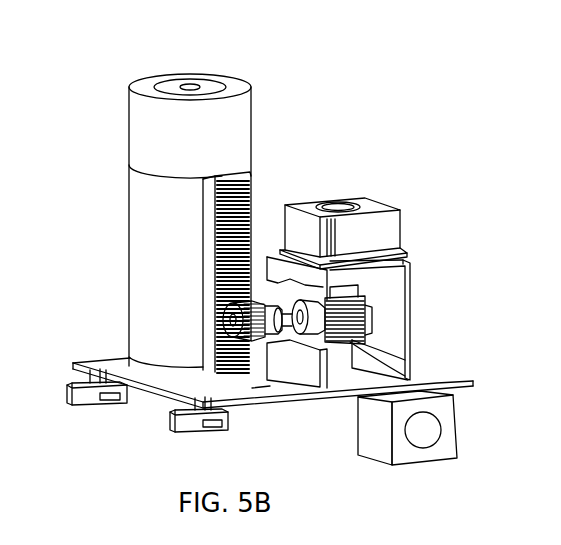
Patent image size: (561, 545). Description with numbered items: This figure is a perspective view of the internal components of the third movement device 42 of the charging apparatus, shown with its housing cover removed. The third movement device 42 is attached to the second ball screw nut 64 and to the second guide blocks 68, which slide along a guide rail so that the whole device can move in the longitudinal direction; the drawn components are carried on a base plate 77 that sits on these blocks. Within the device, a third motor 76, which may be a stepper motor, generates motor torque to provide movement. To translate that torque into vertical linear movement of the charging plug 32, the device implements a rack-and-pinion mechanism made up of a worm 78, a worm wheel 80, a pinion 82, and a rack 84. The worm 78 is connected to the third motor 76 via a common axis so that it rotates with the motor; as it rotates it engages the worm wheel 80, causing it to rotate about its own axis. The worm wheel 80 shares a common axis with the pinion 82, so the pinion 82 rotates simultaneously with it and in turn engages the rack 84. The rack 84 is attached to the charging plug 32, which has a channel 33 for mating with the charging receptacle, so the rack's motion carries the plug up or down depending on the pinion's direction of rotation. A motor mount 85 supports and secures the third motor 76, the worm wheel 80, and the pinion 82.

The charging plug 32 is at (147, 80).
The channel 33 is at (190, 80).
The third movement device 42 is at (368, 96).
The second ball screw nut 64 is at (459, 412).
The second guide blocks 68 is at (76, 402).
The third motor 76 is at (387, 200).
The base plate 77 is at (108, 356).
The worm 78 is at (406, 353).
The worm wheel 80 is at (306, 342).
The pinion 82 is at (255, 352).
The rack 84 is at (217, 243).
The motor mount 85 is at (416, 273).